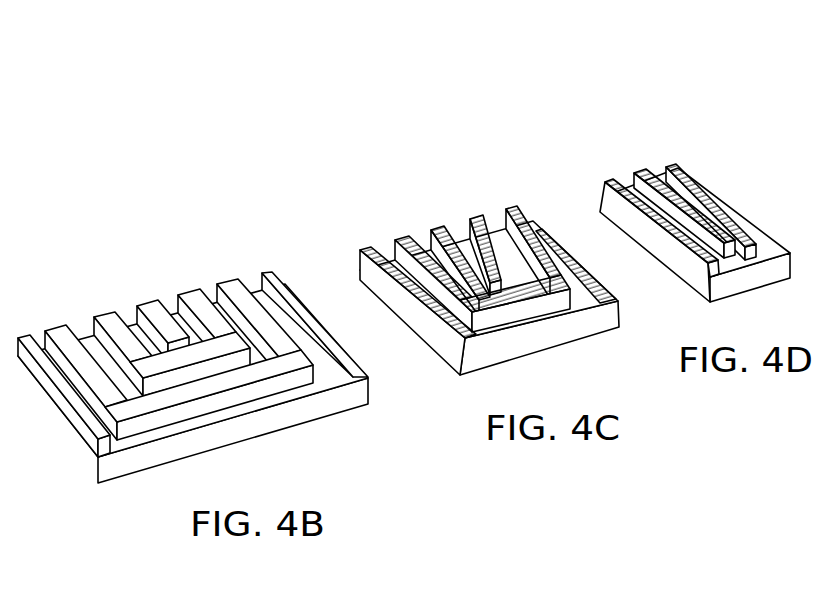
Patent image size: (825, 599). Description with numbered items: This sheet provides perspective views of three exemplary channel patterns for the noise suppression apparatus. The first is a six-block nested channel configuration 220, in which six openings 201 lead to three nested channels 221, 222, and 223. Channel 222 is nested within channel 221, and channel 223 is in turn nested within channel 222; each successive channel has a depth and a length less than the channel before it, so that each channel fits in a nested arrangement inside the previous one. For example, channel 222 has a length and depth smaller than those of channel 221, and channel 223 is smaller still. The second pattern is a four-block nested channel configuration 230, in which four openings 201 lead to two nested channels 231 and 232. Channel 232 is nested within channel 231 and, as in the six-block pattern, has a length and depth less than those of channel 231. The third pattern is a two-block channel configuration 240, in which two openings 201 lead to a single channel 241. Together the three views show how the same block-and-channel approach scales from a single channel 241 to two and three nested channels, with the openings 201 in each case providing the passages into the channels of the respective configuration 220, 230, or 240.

In FIG. 4B, the six-block nested channel configuration 220 is at (190, 330).
In FIG. 4B, the openings 201 is at (82, 332).
In FIG. 4C, the openings 201 is at (422, 245).
In FIG. 4D, the openings 201 is at (660, 173).
In FIG. 4B, the channel 221 is at (105, 446).
In FIG. 4B, the channel 222 is at (257, 358).
In FIG. 4B, the channel 223 is at (153, 321).
In FIG. 4C, the four-block nested channel configuration 230 is at (454, 249).
In FIG. 4C, the channel 231 is at (460, 333).
In FIG. 4C, the channel 232 is at (494, 249).
In FIG. 4D, the two-block channel configuration 240 is at (665, 180).
In FIG. 4D, the channel 241 is at (747, 255).